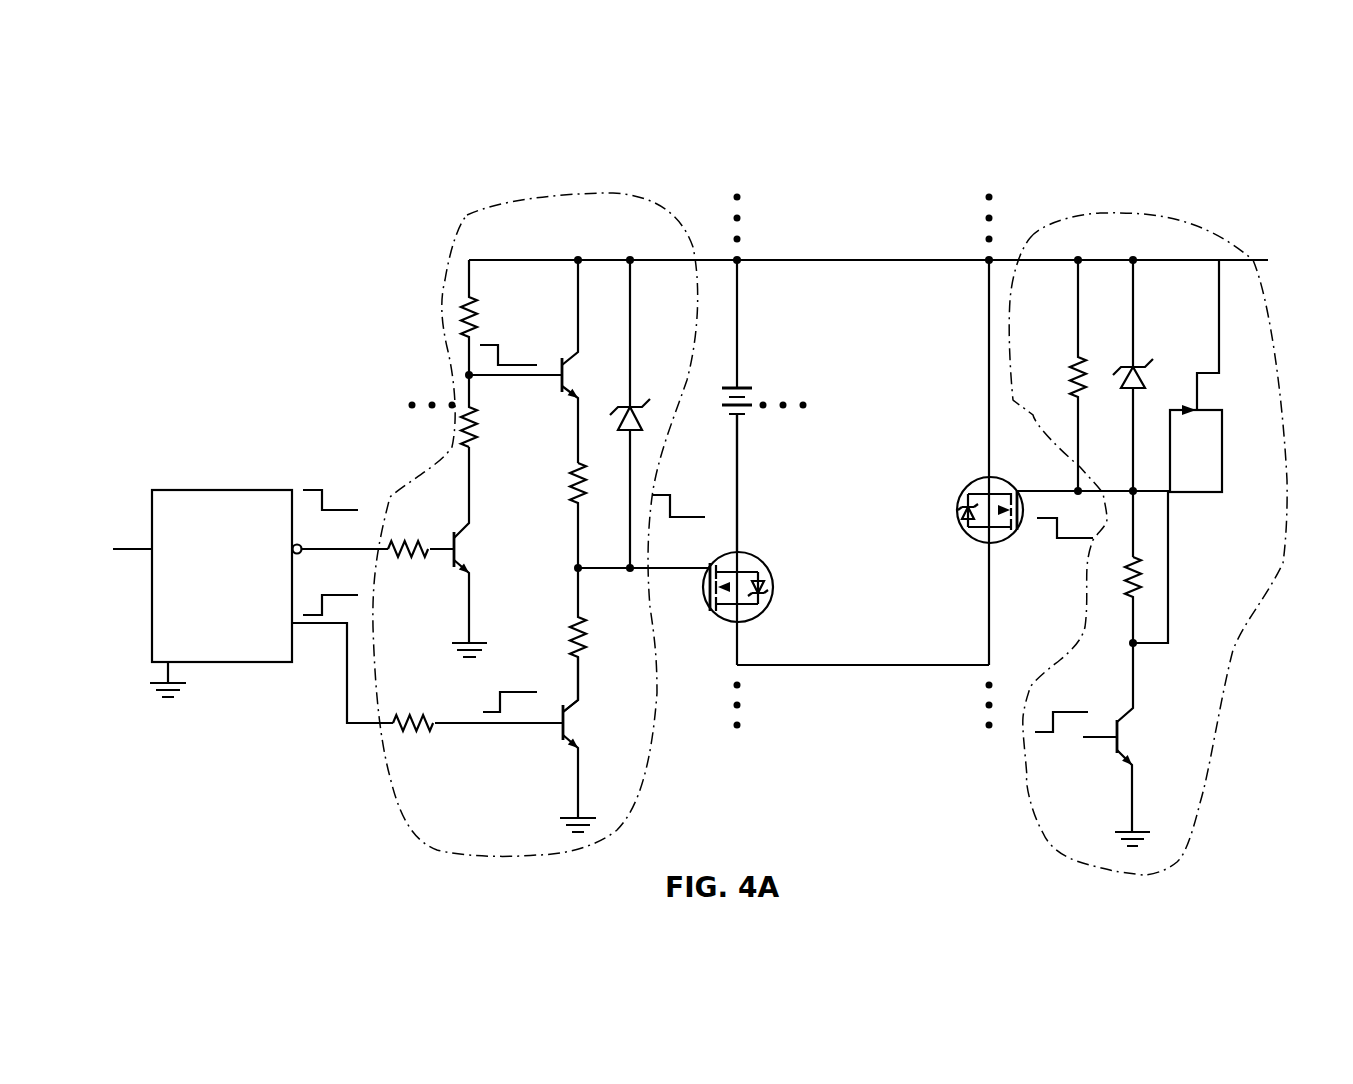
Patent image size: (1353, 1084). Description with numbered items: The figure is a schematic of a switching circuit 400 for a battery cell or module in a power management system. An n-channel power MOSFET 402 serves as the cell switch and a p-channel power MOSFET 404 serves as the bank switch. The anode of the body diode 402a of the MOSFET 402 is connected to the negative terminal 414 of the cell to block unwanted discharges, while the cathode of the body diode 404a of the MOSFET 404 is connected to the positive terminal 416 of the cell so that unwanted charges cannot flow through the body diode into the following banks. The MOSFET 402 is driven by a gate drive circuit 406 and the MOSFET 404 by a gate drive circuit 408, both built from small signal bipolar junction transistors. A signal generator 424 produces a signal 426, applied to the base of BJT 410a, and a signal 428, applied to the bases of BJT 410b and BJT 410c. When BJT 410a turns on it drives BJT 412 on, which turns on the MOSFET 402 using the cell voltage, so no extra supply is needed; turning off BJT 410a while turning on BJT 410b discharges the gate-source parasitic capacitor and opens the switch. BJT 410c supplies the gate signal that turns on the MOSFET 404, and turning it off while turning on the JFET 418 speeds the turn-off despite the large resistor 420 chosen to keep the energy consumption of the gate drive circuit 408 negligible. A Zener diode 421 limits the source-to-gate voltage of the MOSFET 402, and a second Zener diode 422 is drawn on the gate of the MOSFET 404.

The switching circuit 400 is at (217, 198).
The MOSFET 402 is at (775, 575).
The body diode 402a is at (771, 590).
The MOSFET 404 is at (962, 504).
The body diode 404a is at (962, 514).
The gate drive circuit 406 is at (446, 215).
The gate drive circuit 408 is at (1146, 213).
The BJT 410a is at (469, 525).
The BJT 410b is at (578, 698).
The BJT 410c is at (1133, 710).
The BJT 412 is at (566, 362).
The negative terminal 414 is at (737, 430).
The positive terminal 416 is at (737, 342).
The junction gate field-effect transistor (JFET) 418 is at (1222, 426).
The resistor 420 is at (1078, 348).
The Zener diode 421 is at (640, 428).
The zener diode Di 422 is at (1148, 364).
The signal generator 424 is at (202, 621).
The signal 426 is at (308, 548).
The signal 428 is at (301, 626).